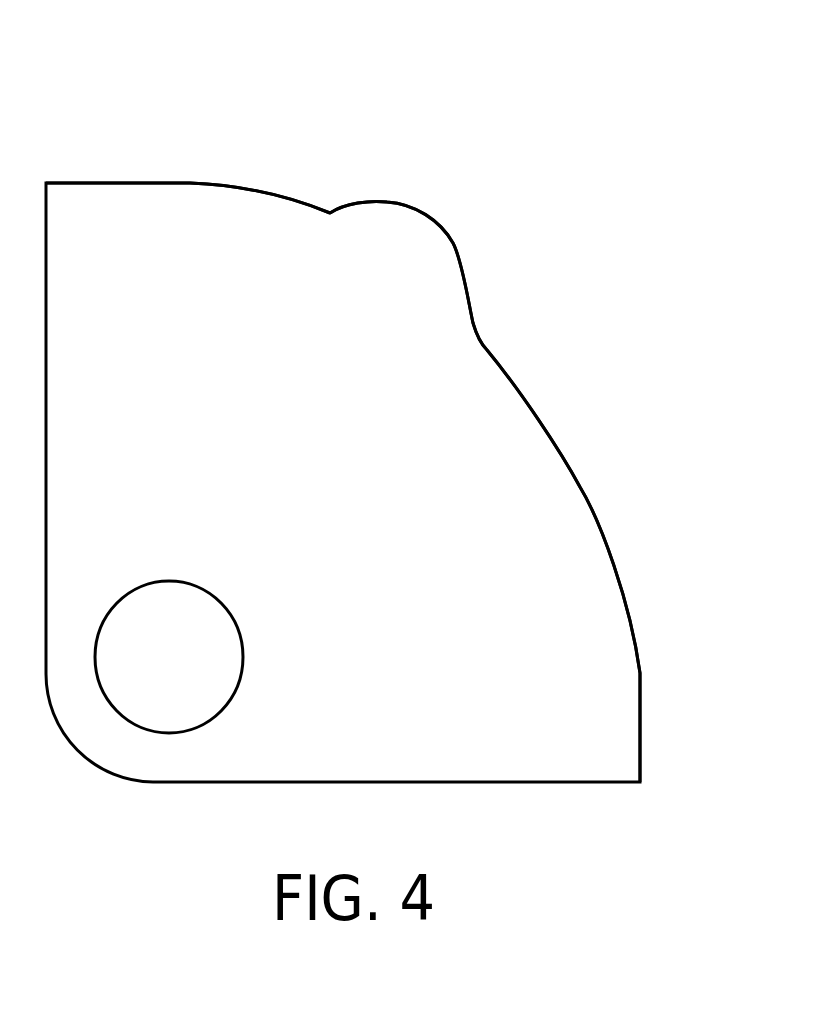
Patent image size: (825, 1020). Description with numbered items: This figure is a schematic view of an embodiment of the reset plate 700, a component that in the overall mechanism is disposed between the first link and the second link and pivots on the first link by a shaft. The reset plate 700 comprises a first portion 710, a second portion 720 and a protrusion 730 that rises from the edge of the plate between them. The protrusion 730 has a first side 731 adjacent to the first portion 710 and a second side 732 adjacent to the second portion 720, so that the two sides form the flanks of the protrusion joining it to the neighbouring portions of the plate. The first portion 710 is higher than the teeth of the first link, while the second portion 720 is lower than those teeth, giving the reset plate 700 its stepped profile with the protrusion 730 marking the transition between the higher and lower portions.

The reset plate 700 is at (815, 48).
The first portion 710 is at (190, 183).
The second portion 720 is at (603, 475).
The protrusion 730 is at (488, 201).
The first side 731 is at (330, 213).
The second side 732 is at (473, 323).